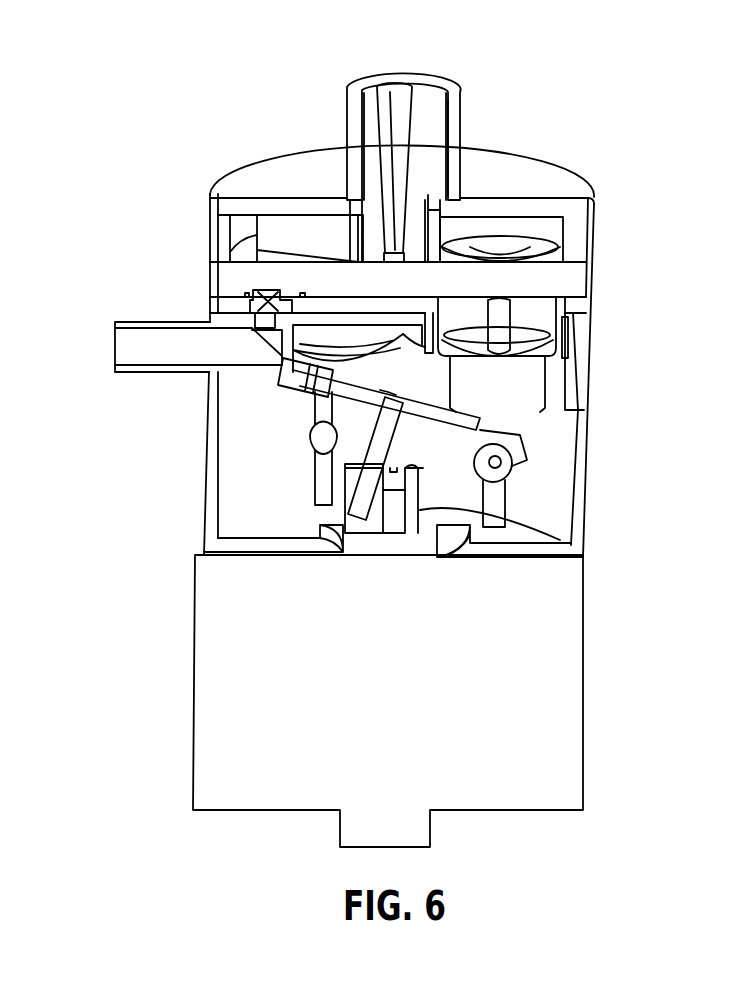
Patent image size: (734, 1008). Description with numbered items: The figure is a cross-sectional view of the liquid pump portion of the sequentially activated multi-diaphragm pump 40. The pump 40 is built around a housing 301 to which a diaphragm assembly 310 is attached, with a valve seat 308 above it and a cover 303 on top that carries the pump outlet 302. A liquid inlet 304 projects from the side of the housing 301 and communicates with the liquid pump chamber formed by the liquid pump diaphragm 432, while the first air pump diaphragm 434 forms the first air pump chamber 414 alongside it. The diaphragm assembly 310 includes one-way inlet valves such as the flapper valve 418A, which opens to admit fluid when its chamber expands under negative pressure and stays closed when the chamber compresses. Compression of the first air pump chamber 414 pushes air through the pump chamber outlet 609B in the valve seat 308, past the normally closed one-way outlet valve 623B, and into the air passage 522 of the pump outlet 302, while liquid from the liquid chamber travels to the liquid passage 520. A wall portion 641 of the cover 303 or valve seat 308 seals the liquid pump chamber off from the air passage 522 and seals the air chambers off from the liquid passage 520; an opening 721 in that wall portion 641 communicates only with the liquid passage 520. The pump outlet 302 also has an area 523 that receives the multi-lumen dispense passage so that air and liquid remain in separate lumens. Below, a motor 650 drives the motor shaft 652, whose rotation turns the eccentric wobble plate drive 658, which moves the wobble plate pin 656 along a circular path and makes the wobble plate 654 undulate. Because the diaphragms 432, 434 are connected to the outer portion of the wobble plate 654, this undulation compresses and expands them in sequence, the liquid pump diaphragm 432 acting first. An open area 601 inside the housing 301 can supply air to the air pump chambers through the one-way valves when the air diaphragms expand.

The pump 40 is at (158, 176).
The housing 301 is at (586, 465).
The pump outlet 302 is at (457, 110).
The cover 303 is at (262, 178).
The liquid inlet 304 is at (143, 340).
The valve seat 308 is at (230, 273).
The diaphragm assembly 310 is at (218, 305).
The first air pump chamber 414 is at (535, 318).
The one-way inlet valve 418A is at (270, 300).
The liquid pump diaphragm 432 is at (305, 378).
The first air pump diaphragm 434 is at (530, 403).
The liquid passage 520 is at (395, 97).
The air passage 522 is at (442, 202).
The area 523 is at (430, 107).
The open area 601 is at (468, 475).
The pump chamber outlet 609B is at (536, 286).
The one-way outlet valve 623B is at (500, 253).
The wall portion 641 is at (312, 237).
The motor 650 is at (523, 697).
The motor shaft 652 is at (420, 500).
The wobble plate 654 is at (513, 455).
The wobble plate pin 656 is at (400, 495).
The eccentric wobble plate drive 658 is at (367, 488).
The opening 721 is at (390, 205).